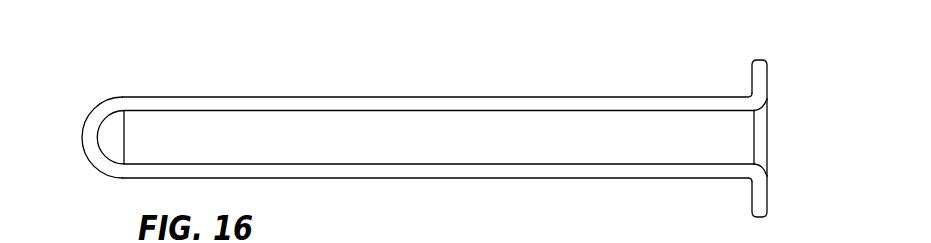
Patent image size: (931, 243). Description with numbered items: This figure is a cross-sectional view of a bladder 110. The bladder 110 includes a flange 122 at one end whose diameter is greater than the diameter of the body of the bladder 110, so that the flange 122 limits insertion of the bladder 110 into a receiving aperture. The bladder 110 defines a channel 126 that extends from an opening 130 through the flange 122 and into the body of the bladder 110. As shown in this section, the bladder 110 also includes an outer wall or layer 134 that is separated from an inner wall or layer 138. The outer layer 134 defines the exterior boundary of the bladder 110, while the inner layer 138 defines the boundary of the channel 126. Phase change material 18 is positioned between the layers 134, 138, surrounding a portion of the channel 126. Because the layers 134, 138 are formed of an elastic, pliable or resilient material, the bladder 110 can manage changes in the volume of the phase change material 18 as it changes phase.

The phase change material 18 is at (123, 103).
The bladder 110 is at (583, 97).
The flange 122 is at (763, 61).
The channel 126 is at (707, 133).
The opening 130 is at (768, 158).
The outer wall or layer 134 is at (500, 97).
The inner wall or layer 138 is at (357, 114).